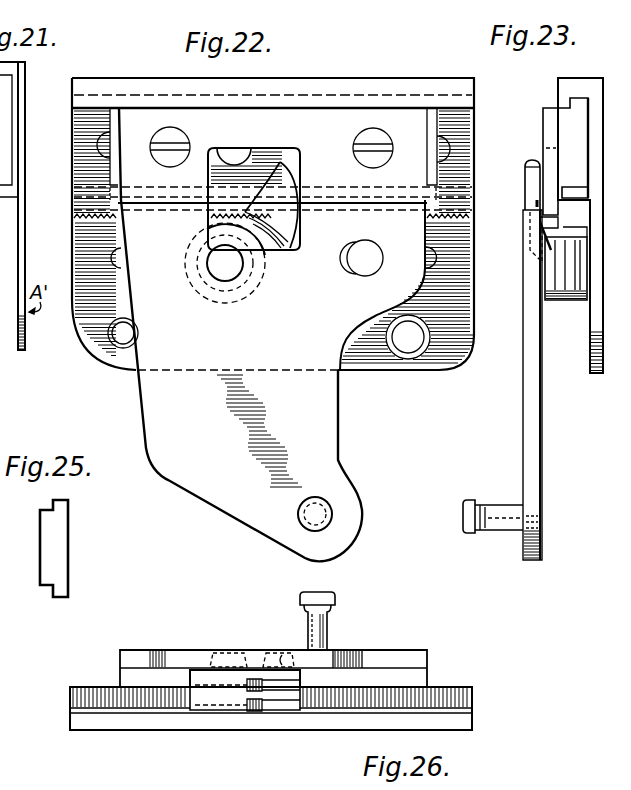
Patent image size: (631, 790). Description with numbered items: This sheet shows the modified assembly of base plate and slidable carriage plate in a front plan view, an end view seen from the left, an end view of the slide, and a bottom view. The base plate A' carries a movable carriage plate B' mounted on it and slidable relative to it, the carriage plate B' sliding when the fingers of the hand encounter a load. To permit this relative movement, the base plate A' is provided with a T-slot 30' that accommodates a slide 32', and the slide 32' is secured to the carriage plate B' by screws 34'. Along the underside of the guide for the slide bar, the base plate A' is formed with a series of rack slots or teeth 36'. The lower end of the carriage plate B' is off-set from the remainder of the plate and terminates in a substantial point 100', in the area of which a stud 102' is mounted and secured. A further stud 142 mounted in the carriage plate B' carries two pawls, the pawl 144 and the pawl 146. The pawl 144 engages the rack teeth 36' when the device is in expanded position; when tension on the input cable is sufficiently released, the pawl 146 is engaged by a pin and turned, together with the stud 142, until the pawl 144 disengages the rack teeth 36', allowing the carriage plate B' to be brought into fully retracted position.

In FIG. 22, the T-slot 30' is at (273, 211).
In FIG. 23, the T-slot 30' is at (580, 213).
In FIG. 22, the slide 32' is at (273, 131).
In FIG. 23, the slide 32' is at (544, 148).
In FIG. 25, the slide 32' is at (74, 548).
In FIG. 22, the screws 34' is at (290, 240).
In FIG. 22, the rack slots or teeth 36' is at (72, 235).
In FIG. 23, the rack slots or teeth 36' is at (515, 226).
In FIG. 26, the rack slots or teeth 36' is at (260, 695).
In FIG. 22, the point 100' is at (263, 334).
In FIG. 23, the point 100' is at (522, 403).
In FIG. 26, the point 100' is at (363, 642).
In FIG. 22, the stud 102' is at (352, 514).
In FIG. 23, the stud 102' is at (486, 538).
In FIG. 26, the stud 102' is at (343, 618).
In FIG. 22, the stud 142 is at (232, 277).
In FIG. 26, the stud 142 is at (230, 660).
In FIG. 22, the pawl 144 is at (296, 220).
In FIG. 23, the pawl 144 is at (570, 267).
In FIG. 26, the pawl 144 is at (281, 700).
In FIG. 22, the pawl 146 is at (293, 178).
In FIG. 23, the pawl 146 is at (530, 182).
In FIG. 26, the pawl 146 is at (278, 677).
In FIG. 22, the base plate A' is at (463, 65).
In FIG. 23, the base plate A' is at (593, 380).
In FIG. 26, the base plate A' is at (171, 747).
In FIG. 22, the carriage plate B' is at (339, 87).
In FIG. 23, the carriage plate B' is at (512, 264).
In FIG. 26, the carriage plate B' is at (283, 654).